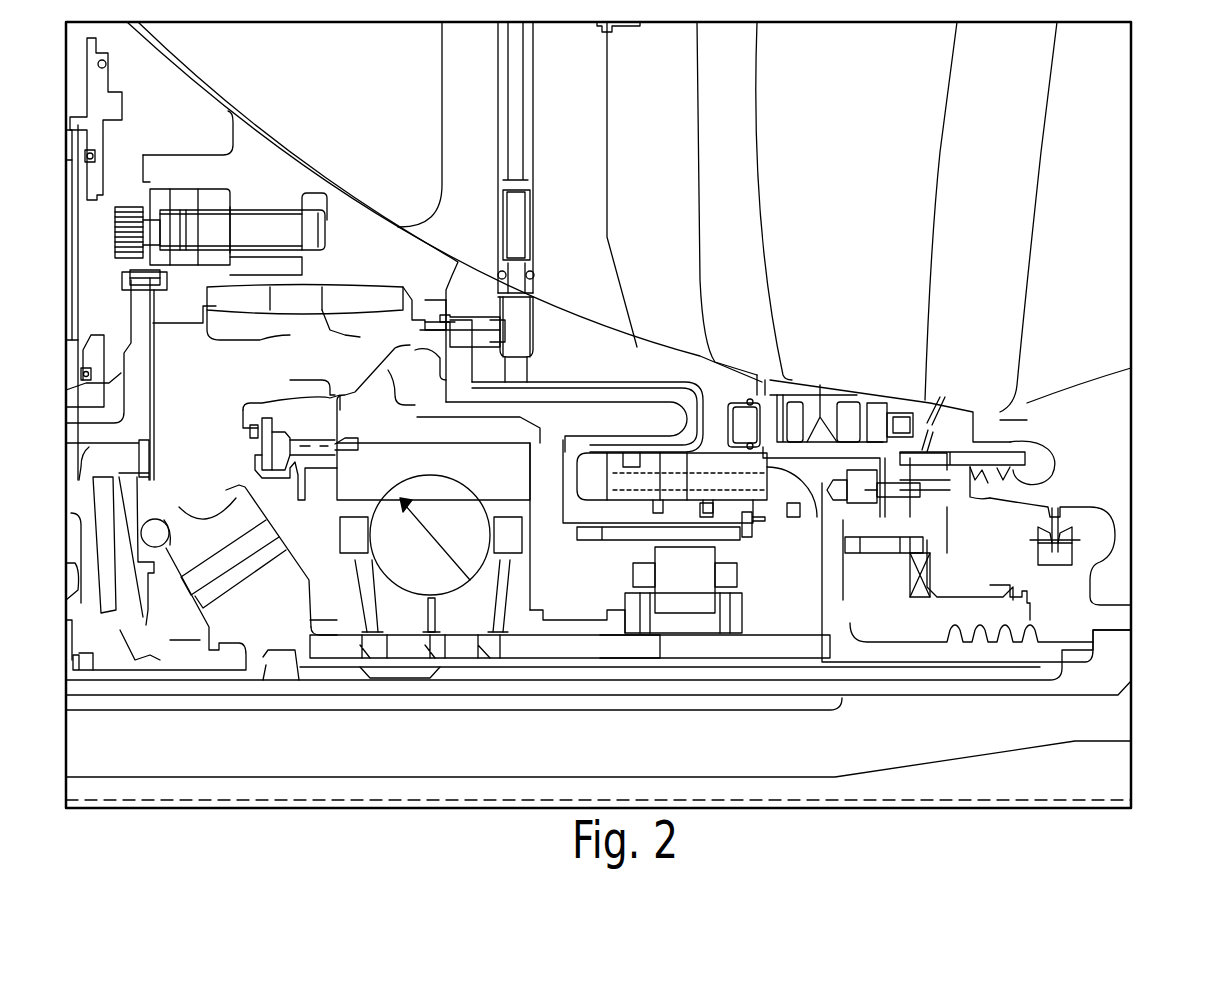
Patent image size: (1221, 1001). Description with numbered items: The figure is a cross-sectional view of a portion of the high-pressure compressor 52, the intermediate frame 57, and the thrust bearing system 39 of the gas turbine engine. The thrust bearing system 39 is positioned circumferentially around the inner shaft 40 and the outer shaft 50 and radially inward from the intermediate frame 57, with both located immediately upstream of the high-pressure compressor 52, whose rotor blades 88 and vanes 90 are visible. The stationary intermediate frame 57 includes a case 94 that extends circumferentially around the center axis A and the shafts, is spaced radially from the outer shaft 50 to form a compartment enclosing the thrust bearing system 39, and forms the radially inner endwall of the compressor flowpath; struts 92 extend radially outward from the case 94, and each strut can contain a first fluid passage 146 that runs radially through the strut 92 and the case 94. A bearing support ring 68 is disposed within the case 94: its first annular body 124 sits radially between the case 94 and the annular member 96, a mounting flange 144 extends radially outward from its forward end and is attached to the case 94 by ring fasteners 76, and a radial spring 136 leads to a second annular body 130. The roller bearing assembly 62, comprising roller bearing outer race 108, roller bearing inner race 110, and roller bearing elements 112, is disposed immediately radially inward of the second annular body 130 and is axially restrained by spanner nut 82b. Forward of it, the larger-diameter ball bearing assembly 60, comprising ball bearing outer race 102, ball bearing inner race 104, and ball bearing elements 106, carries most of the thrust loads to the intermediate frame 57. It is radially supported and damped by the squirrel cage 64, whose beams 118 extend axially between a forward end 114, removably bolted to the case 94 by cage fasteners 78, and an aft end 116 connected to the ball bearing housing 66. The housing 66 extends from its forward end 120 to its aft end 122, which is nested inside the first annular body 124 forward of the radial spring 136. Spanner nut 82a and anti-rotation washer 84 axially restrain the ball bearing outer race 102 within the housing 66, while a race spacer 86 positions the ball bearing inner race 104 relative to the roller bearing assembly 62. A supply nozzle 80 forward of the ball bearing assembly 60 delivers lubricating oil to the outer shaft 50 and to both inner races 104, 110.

The thrust bearing system 39 is at (233, 378).
The inner shaft 40 is at (1105, 718).
The outer shaft 50 is at (1112, 672).
The high-pressure compressor 52 is at (1009, 221).
The intermediate frame 57 is at (379, 210).
The ball bearing assembly 60 is at (320, 546).
The roller bearing assembly 62 is at (585, 594).
The squirrel cage 64 is at (308, 283).
The ball bearing housing 66 is at (425, 425).
The bearing support ring 68 is at (603, 386).
The ring fasteners 76 is at (400, 333).
The cage fasteners 78 is at (258, 222).
The supply nozzle 80 is at (138, 640).
The spanner nut 82a is at (285, 480).
The spanner nut 82b is at (578, 532).
The anti-rotation washer 84 is at (262, 442).
The race spacer 86 is at (570, 622).
The rotor blades 88 is at (1060, 426).
The vanes 90 is at (856, 211).
The struts 92 is at (698, 163).
The case 94 is at (641, 350).
The annular member 96 is at (664, 460).
The ball bearing outer race 102 is at (368, 460).
The ball bearing inner race 104 is at (460, 622).
The ball bearing elements 106 is at (431, 553).
The roller bearing outer race 108 is at (735, 545).
The roller bearing inner race 110 is at (705, 620).
The roller bearing elements 112 is at (683, 590).
The forward end 114 is at (173, 307).
The aft end 116 is at (412, 296).
The beams 118 is at (222, 310).
The forward end 120 is at (250, 412).
The aft end 122 is at (525, 427).
The first annular body 124 is at (645, 397).
The second annular body 130 is at (735, 508).
The radial spring 136 is at (610, 440).
The mounting flange 144 is at (458, 305).
The first fluid passage 146 is at (515, 122).
The center axis A is at (1115, 800).